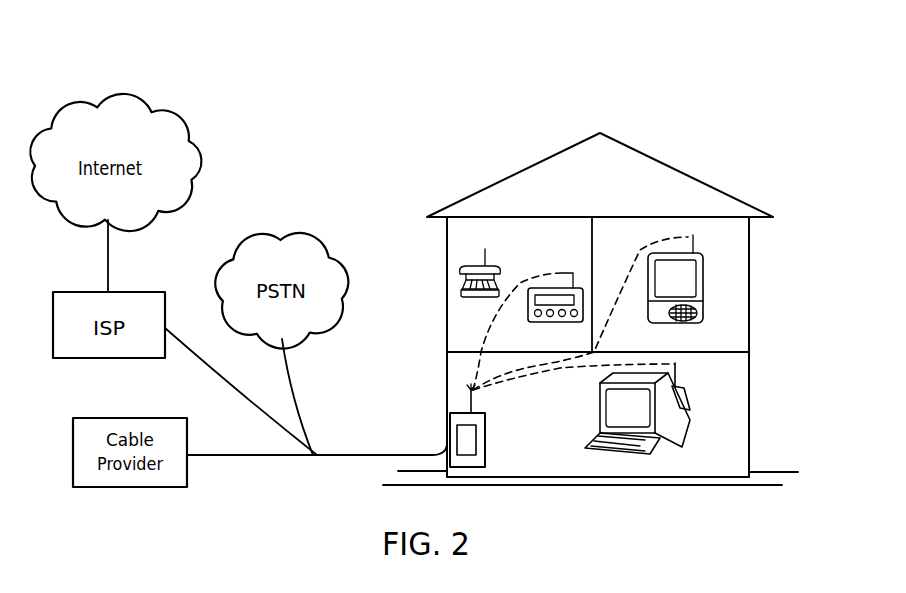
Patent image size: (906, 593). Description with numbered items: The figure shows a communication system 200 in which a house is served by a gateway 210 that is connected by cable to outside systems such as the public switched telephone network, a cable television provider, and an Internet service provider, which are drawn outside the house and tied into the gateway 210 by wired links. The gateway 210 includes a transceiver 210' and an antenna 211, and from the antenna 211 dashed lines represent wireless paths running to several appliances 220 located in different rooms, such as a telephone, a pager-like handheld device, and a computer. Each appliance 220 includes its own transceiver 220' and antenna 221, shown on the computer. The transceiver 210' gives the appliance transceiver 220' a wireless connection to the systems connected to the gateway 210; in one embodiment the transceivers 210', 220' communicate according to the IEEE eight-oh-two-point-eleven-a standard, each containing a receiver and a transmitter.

The communication system 200 is at (694, 133).
The gateway 210 is at (495, 443).
The transceiver 210' is at (498, 436).
The antenna 211 is at (476, 398).
The appliance 220 is at (597, 340).
The transceiver 220' is at (708, 398).
The antenna 221 is at (678, 366).